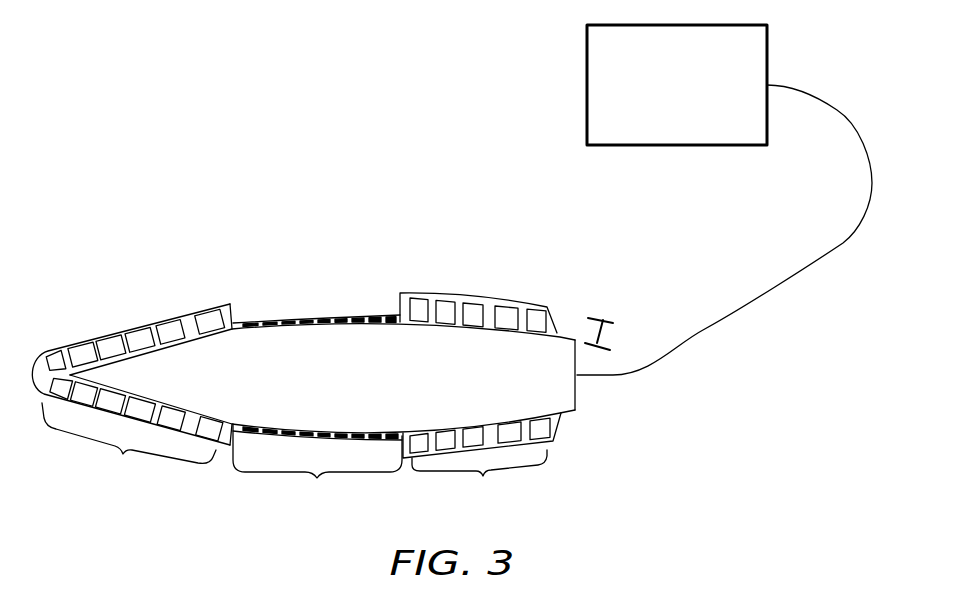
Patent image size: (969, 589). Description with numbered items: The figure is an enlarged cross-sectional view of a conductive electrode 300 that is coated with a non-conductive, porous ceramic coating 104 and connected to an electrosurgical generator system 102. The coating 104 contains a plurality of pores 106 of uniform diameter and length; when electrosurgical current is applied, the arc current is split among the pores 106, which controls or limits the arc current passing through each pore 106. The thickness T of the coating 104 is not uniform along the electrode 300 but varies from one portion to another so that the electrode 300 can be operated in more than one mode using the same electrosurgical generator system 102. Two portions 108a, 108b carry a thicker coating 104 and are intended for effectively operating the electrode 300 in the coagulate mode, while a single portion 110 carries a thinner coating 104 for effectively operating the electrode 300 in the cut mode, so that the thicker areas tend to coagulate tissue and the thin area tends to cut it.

The electrosurgical generator system 102 is at (659, 100).
The non-conductive, porous ceramic coating 104 is at (530, 318).
The pores 106 is at (540, 430).
The portion of the electrode 108a is at (520, 459).
The portion of the electrode 108b is at (132, 428).
The portion of the electrode 110 is at (317, 467).
The electrode 300 is at (342, 387).
The thickness of the coating T is at (607, 331).